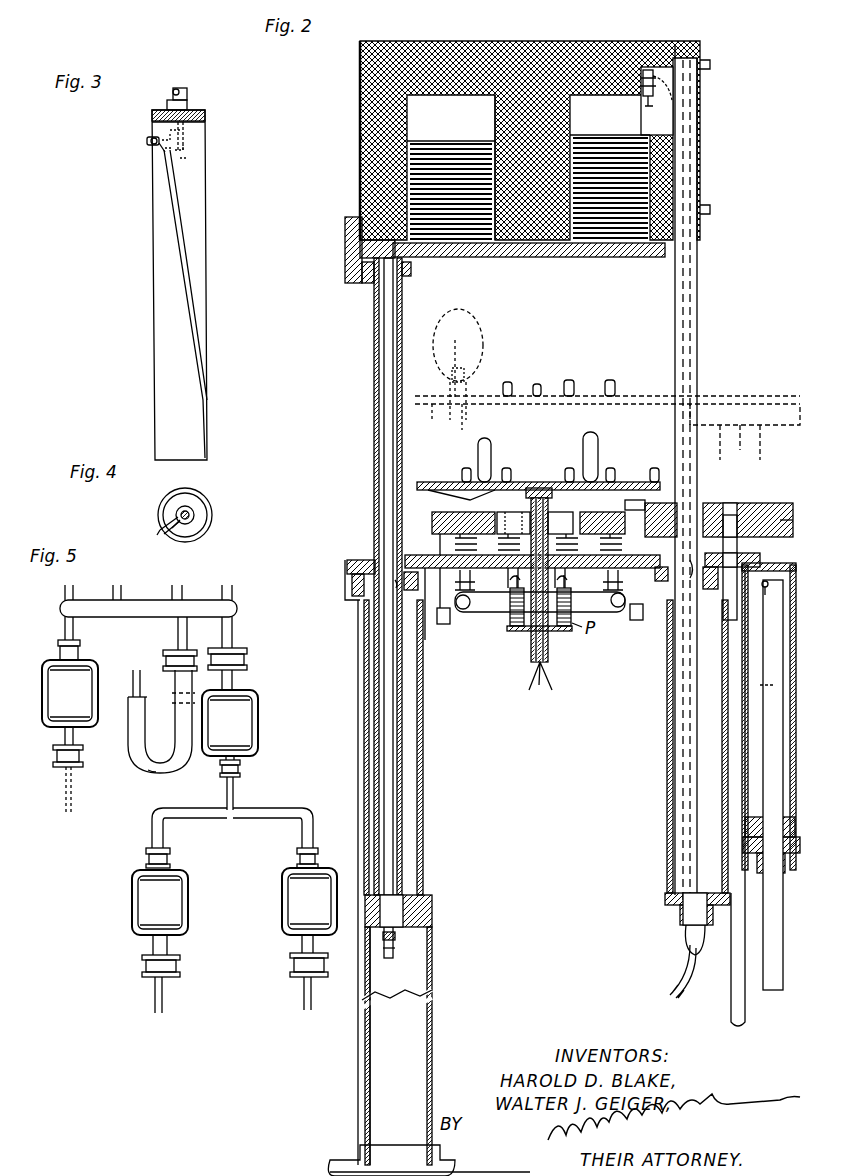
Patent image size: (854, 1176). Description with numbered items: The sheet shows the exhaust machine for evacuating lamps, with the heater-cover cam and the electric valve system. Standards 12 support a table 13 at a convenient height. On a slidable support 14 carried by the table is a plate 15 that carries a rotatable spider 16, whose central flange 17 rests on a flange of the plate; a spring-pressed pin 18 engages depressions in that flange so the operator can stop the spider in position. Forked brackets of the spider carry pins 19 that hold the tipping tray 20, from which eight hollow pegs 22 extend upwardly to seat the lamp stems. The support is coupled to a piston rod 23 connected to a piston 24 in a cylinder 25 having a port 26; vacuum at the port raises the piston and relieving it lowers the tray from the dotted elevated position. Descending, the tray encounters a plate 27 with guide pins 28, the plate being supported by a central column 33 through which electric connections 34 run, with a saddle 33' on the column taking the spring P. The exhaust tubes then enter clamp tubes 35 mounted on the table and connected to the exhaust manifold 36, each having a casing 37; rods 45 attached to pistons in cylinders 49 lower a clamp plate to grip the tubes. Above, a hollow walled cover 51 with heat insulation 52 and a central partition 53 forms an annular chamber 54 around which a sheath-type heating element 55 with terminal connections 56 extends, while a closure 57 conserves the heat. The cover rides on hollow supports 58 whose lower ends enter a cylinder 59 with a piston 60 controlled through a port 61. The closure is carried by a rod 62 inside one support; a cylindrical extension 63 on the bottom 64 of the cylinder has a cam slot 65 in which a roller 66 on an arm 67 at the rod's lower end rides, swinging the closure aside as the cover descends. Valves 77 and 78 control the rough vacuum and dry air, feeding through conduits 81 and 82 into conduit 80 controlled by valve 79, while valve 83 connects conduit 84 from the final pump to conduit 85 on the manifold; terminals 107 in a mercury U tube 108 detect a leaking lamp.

In FIG. 2, the standards 12 is at (358, 690).
In FIG. 2, the table 13 is at (347, 565).
In FIG. 2, the slidable support 14 is at (738, 553).
In FIG. 2, the plate 15 is at (758, 503).
In FIG. 2, the spider 16 is at (634, 408).
In FIG. 2, the central flange 17 is at (762, 493).
In FIG. 2, the spring-pressed pin 18 is at (662, 503).
In FIG. 2, the pins 19 is at (535, 385).
In FIG. 2, the tipping tray 20 is at (428, 482).
In FIG. 2, the hollow pegs 22 is at (582, 382).
In FIG. 2, the piston rod 23 is at (781, 938).
In FIG. 2, the piston 24 is at (763, 685).
In FIG. 2, the cylinder 25 is at (790, 630).
In FIG. 2, the port 26 is at (763, 596).
In FIG. 2, the plate 27 is at (470, 497).
In FIG. 2, the guide pins 28 is at (598, 460).
In FIG. 2, the central column 33 is at (521, 579).
In FIG. 2, the saddle 33' is at (550, 645).
In FIG. 2, the electric connections 34 is at (540, 686).
In FIG. 2, the clamp tubes 35 is at (486, 482).
In FIG. 2, the exhaust manifold 36 is at (490, 612).
In FIG. 5, the exhaust manifold 36 is at (163, 616).
In FIG. 2, the casing 37 is at (460, 586).
In FIG. 5, the casing 37 is at (172, 592).
In FIG. 2, the rods 45 is at (432, 528).
In FIG. 2, the cylinder 49 is at (440, 628).
In FIG. 2, the cover 51 is at (362, 110).
In FIG. 2, the heat insulation 52 is at (362, 128).
In FIG. 2, the central partition 53 is at (495, 122).
In FIG. 2, the annular chamber 54 is at (451, 170).
In FIG. 2, the electrical heating element 55 is at (598, 140).
In FIG. 2, the terminal connections 56 is at (650, 64).
In FIG. 2, the closure 57 is at (594, 257).
In FIG. 2, the hollow supports 58 is at (374, 338).
In FIG. 3, the hollow supports 58 is at (188, 102).
In FIG. 2, the cylinder 59 is at (364, 656).
In FIG. 2, the piston 60 is at (368, 600).
In FIG. 2, the port 61 is at (380, 580).
In FIG. 2, the rod 62 is at (384, 386).
In FIG. 3, the rod 62 is at (186, 86).
In FIG. 4, the rod 62 is at (188, 506).
In FIG. 2, the cylindrical extension 63 is at (366, 1038).
In FIG. 3, the cylindrical extension 63 is at (155, 236).
In FIG. 4, the cylindrical extension 63 is at (208, 504).
In FIG. 2, the bottom 64 is at (432, 910).
In FIG. 2, the cam slot 65 is at (432, 1028).
In FIG. 3, the cam slot 65 is at (188, 230).
In FIG. 3, the roller 66 is at (150, 146).
In FIG. 4, the roller 66 is at (162, 529).
In FIG. 3, the arm 67 is at (160, 150).
In FIG. 4, the arm 67 is at (172, 520).
In FIG. 5, the valve 77 is at (290, 912).
In FIG. 5, the valve 78 is at (175, 906).
In FIG. 5, the valve 79 is at (245, 724).
In FIG. 5, the conduit 80 is at (236, 792).
In FIG. 5, the conduit 81 is at (266, 818).
In FIG. 5, the conduit 82 is at (198, 818).
In FIG. 5, the valve 83 is at (85, 695).
In FIG. 5, the conduit 84 is at (76, 796).
In FIG. 5, the conduit 85 is at (65, 580).
In FIG. 5, the terminals 107 is at (140, 690).
In FIG. 5, the mercury U tube 108 is at (155, 776).